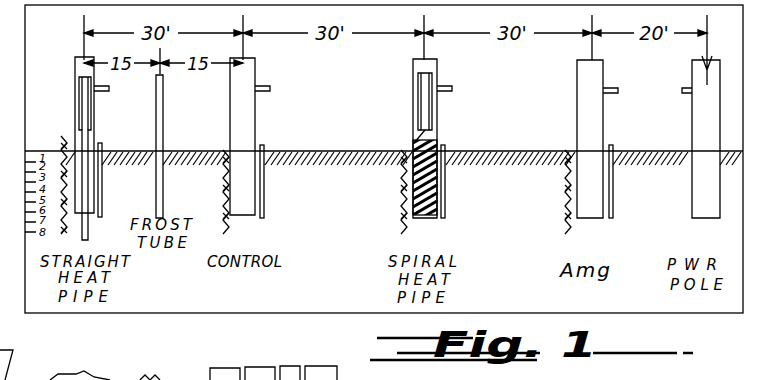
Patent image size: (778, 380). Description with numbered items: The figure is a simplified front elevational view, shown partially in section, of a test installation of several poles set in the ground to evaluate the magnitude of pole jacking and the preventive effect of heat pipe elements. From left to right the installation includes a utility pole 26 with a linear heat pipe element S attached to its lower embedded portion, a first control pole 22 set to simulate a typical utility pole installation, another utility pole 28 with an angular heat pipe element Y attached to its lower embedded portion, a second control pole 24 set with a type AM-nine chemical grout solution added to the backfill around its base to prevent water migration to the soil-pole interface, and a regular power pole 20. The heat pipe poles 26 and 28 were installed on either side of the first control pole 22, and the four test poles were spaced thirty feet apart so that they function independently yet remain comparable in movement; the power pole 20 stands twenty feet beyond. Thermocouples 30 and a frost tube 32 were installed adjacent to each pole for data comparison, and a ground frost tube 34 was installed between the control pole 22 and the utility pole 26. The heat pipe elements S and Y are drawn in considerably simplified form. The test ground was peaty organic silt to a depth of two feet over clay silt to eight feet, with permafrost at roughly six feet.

The linear heat pipe element S is at (75, 88).
The angular heat pipe element Y is at (419, 100).
The regular power pole 20 is at (692, 115).
The first control pole 22 is at (258, 118).
The second control pole 24 is at (577, 113).
The utility pole 26 is at (98, 120).
The utility pole 28 is at (433, 120).
The thermocouples 30 is at (63, 136).
The frost tube 32 is at (103, 193).
The ground frost tube 34 is at (166, 112).